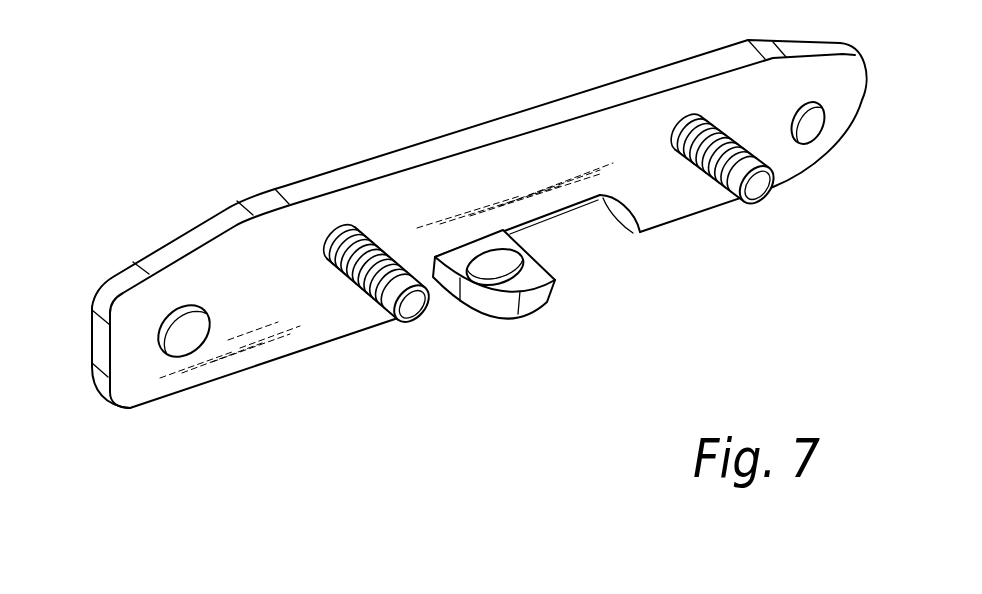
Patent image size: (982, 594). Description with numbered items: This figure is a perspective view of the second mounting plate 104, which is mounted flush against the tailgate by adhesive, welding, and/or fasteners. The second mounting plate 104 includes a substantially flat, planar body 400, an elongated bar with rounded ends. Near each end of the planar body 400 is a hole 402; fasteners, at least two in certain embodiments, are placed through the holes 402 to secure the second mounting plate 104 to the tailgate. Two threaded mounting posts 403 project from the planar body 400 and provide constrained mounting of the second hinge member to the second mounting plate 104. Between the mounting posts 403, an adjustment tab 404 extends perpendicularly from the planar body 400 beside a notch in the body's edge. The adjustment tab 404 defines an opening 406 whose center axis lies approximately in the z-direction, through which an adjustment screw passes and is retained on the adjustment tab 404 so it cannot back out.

The second mounting plate 104 is at (300, 112).
The planar body 400 is at (553, 153).
The holes 402 is at (803, 127).
The threaded mounting posts 403 is at (723, 177).
The adjustment tab 404 is at (530, 300).
The opening 406 is at (484, 260).